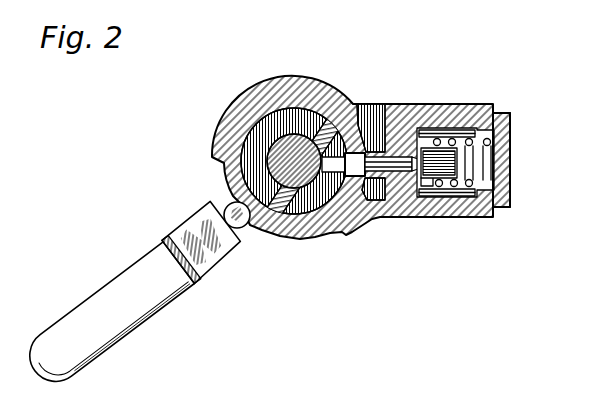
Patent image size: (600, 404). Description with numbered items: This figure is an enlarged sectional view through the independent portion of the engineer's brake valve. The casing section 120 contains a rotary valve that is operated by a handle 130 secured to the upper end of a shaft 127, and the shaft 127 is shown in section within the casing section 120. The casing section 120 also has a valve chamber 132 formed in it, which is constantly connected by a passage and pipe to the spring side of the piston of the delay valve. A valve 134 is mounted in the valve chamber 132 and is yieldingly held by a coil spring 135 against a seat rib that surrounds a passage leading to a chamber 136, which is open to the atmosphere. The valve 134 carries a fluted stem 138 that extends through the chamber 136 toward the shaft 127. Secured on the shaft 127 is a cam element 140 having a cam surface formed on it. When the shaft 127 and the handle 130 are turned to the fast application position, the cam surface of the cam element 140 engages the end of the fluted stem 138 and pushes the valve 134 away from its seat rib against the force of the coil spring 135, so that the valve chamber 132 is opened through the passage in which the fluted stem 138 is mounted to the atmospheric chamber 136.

The casing section 120 is at (262, 88).
The cam element 140 is at (292, 110).
The shaft 127 is at (312, 130).
The fluted stem 138 is at (357, 160).
The chamber 136 is at (376, 195).
The valve 134 is at (445, 150).
The valve chamber 132 is at (452, 193).
The coil spring 135 is at (510, 156).
The handle 130 is at (68, 332).